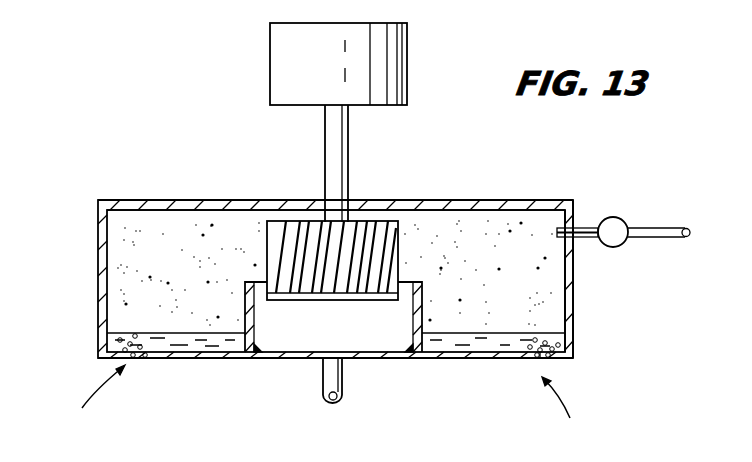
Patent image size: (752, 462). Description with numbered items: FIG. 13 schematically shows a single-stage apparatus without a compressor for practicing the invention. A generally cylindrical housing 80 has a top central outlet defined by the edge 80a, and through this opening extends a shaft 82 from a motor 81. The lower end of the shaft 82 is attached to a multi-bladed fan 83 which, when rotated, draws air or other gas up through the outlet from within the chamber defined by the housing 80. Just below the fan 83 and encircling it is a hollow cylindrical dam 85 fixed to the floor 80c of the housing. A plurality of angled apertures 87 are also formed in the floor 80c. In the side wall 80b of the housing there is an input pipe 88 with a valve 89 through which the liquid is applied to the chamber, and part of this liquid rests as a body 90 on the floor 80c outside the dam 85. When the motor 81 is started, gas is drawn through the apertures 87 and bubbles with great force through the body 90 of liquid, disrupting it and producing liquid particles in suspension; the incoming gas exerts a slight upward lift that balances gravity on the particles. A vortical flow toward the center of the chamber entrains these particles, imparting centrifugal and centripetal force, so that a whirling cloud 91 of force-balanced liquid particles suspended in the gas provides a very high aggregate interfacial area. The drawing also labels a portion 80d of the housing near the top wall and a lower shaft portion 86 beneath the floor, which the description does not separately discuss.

The housing 80 is at (572, 265).
The edge 80a is at (380, 208).
The side wall 80b is at (572, 305).
The floor 80c is at (303, 358).
The housing cover 80d is at (512, 208).
The motor 81 is at (393, 62).
The shaft 82 is at (333, 149).
The multi-bladed fan 83 is at (278, 222).
The hollow cylindrical dam 85 is at (240, 345).
The lower shaft 86 is at (333, 373).
The angled apertures 87 is at (535, 365).
The input pipe 88 is at (580, 232).
The valve 89 is at (628, 222).
The body of liquid 90 is at (455, 352).
The whirling cloud 91 is at (113, 248).